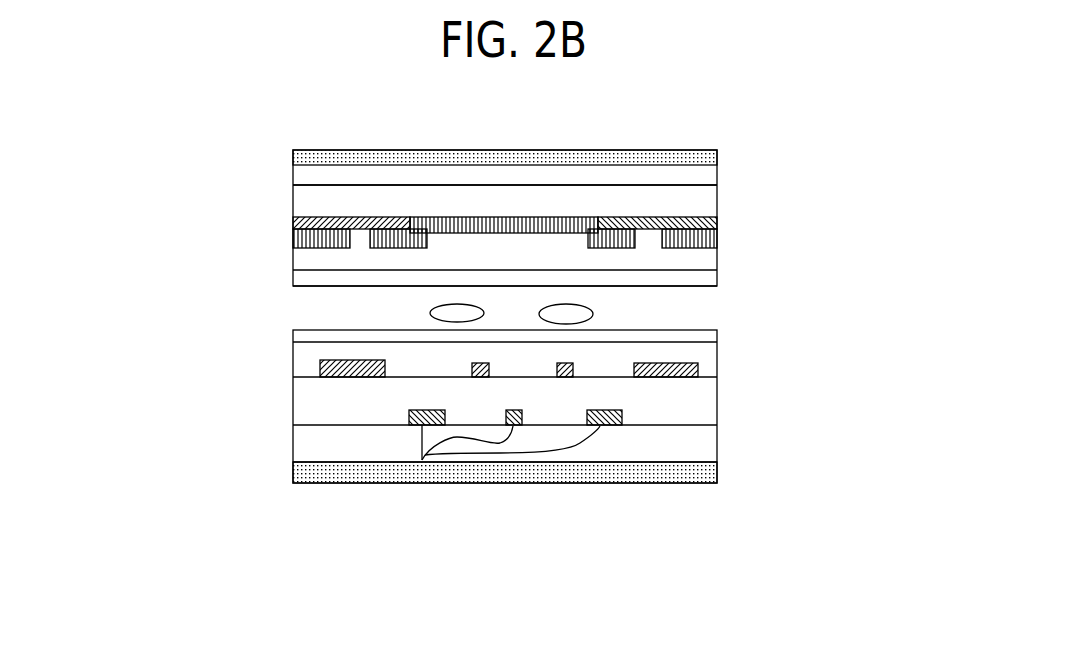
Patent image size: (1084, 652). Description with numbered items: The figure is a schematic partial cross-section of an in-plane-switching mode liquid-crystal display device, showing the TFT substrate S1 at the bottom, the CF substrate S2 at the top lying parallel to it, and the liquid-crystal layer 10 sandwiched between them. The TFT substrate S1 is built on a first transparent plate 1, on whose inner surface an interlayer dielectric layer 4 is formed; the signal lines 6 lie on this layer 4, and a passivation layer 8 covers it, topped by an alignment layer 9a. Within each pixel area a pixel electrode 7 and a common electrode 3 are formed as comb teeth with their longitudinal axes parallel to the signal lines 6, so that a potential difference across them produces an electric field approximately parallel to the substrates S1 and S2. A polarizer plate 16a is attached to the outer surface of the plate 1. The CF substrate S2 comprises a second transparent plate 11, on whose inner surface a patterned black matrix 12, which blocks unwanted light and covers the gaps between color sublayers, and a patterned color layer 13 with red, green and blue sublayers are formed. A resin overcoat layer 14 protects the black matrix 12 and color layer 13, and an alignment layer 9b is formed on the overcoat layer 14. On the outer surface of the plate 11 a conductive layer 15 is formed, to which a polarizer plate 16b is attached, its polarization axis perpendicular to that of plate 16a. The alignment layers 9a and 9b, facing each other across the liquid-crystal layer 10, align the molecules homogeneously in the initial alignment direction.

The second substrate S2 is at (345, 140).
The polarizer plate 16b is at (423, 150).
The conductive layer 15 is at (707, 180).
The second transparent plate 11 is at (705, 205).
The color layer 13 is at (295, 233).
The black matrix 12 is at (707, 230).
The overcoat layer 14 is at (707, 262).
The alignment layer 9b is at (303, 273).
The liquid-crystal layer 10 is at (347, 312).
The first substrate S1 is at (350, 502).
The alignment layer 9a is at (305, 335).
The passivation layer 8 is at (705, 355).
The pixel electrode 7 is at (557, 367).
The signal line 6 is at (318, 366).
The interlayer dielectric layer 4 is at (705, 412).
The common electrode 3 is at (421, 462).
The first transparent plate 1 is at (705, 450).
The polarizer plate 16a is at (553, 475).